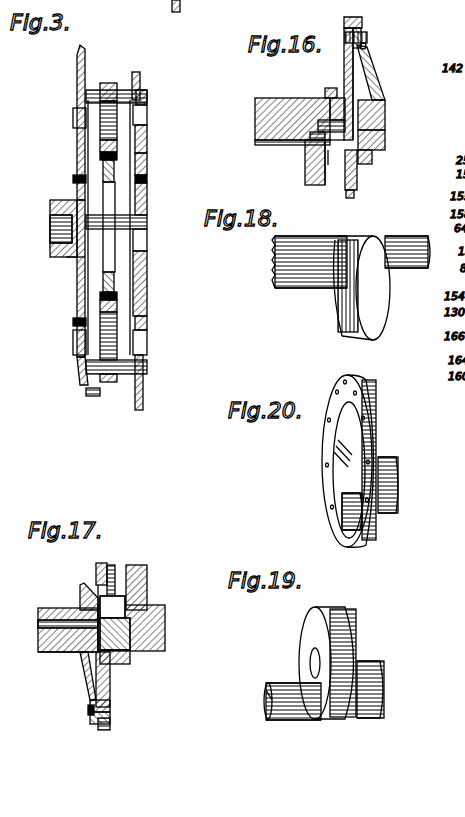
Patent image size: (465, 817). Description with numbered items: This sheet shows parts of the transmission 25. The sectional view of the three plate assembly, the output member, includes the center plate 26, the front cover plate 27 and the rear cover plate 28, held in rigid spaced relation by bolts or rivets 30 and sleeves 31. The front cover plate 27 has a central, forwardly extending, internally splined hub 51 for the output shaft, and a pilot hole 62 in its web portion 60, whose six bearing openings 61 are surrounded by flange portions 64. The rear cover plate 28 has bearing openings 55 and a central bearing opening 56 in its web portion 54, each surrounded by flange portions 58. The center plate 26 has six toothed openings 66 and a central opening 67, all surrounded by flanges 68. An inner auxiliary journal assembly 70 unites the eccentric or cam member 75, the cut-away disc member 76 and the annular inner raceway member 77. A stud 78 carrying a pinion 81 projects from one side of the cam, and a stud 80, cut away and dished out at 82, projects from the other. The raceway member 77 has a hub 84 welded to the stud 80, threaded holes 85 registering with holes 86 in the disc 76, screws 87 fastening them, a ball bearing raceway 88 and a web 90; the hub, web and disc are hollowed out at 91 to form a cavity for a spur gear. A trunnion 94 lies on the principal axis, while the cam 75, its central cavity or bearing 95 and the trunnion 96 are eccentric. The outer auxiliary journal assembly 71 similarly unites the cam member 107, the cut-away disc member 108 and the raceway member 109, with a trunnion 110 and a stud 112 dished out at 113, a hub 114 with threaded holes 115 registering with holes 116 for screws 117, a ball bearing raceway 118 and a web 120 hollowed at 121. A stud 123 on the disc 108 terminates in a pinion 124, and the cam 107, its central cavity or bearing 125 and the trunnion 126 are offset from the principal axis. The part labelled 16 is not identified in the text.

In FIG. 3, the transmission 25 is at (141, 62).
In FIG. 3, the center plate 26 is at (108, 83).
In FIG. 3, the front cover plate 27 is at (78, 80).
In FIG. 3, the rear cover plate 28 is at (147, 290).
In FIG. 3, the bolts or rivets 30 is at (144, 92).
In FIG. 3, the sleeves 31 is at (164, 2).
In FIG. 3, the internally splined hub 51 is at (50, 252).
In FIG. 3, the web portion 54 is at (147, 186).
In FIG. 3, the bearing openings 55 is at (147, 108).
In FIG. 3, the central bearing opening 56 is at (147, 238).
In FIG. 3, the flange portions 58 is at (140, 75).
In FIG. 3, the web portion 60 is at (77, 160).
In FIG. 3, the bearing openings 61 is at (73, 120).
In FIG. 3, the pilot hole 62 is at (72, 258).
In FIG. 3, the flange portions 64 is at (73, 182).
In FIG. 3, the openings 66 is at (100, 138).
In FIG. 3, the central opening 67 is at (112, 258).
In FIG. 3, the flanges 68 is at (114, 162).
In FIG. 16, the inner auxiliary journal assembly 70 is at (385, 72).
In FIG. 17, the outer auxiliary journal assembly 71 is at (158, 574).
In FIG. 16, the eccentric or cam member 75 is at (305, 172).
In FIG. 18, the eccentric or cam member 75 is at (340, 324).
In FIG. 20, the cut-away disc member 76 is at (362, 446).
In FIG. 16, the annular inner raceway member 77 is at (357, 176).
In FIG. 16, the stud 78 is at (296, 126).
In FIG. 18, the stud 78 is at (330, 292).
In FIG. 16, the stud 80 is at (358, 110).
In FIG. 18, the stud 80 is at (420, 236).
In FIG. 16, the pinion 81 is at (262, 143).
In FIG. 18, the pinion 81 is at (280, 290).
In FIG. 16, the dished-out cut-away 82 is at (336, 110).
In FIG. 18, the dished-out cut-away 82 is at (410, 268).
In FIG. 16, the hub 84 is at (325, 92).
In FIG. 16, the threaded holes 85 is at (353, 46).
In FIG. 16, the holes 86 is at (366, 48).
In FIG. 20, the holes 86 is at (343, 382).
In FIG. 16, the screws 87 is at (367, 36).
In FIG. 16, the ball bearing raceway 88 is at (362, 18).
In FIG. 16, the web 90 is at (344, 62).
In FIG. 16, the cavity 91 is at (336, 160).
In FIG. 20, the cavity 91 is at (350, 542).
In FIG. 16, the trunnion 94 is at (385, 122).
In FIG. 20, the trunnion 94 is at (398, 472).
In FIG. 16, the central cavity or bearing 95 is at (322, 132).
In FIG. 16, the trunnion 96 is at (366, 142).
In FIG. 20, the trunnion 96 is at (345, 516).
In FIG. 19, the eccentric or cam member 107 is at (342, 634).
In FIG. 17, the eccentric or cam member 107 is at (146, 566).
In FIG. 17, the cut-away disc member 108 is at (86, 678).
In FIG. 17, the annular inner raceway member 109 is at (96, 576).
In FIG. 19, the trunnion 110 is at (376, 694).
In FIG. 17, the trunnion 110 is at (165, 640).
In FIG. 19, the stud 112 is at (292, 712).
In FIG. 17, the stud 112 is at (48, 644).
In FIG. 19, the dished-out cut-away 113 is at (268, 686).
In FIG. 17, the dished-out cut-away 113 is at (140, 648).
In FIG. 17, the hub 114 is at (118, 664).
In FIG. 17, the threaded holes 115 is at (110, 706).
In FIG. 17, the holes 116 is at (92, 724).
In FIG. 17, the screws 117 is at (88, 710).
In FIG. 17, the ball bearing raceway 118 is at (108, 564).
In FIG. 17, the web 120 is at (110, 690).
In FIG. 17, the cavity 121 is at (116, 596).
In FIG. 17, the stud 123 is at (88, 652).
In FIG. 17, the pinion 124 is at (60, 610).
In FIG. 19, the central cavity or bearing 125 is at (310, 668).
In FIG. 17, the central cavity or bearing 125 is at (125, 616).
In FIG. 17, the trunnion 126 is at (44, 626).
In FIG. 16, the flange 16 is at (376, 90).